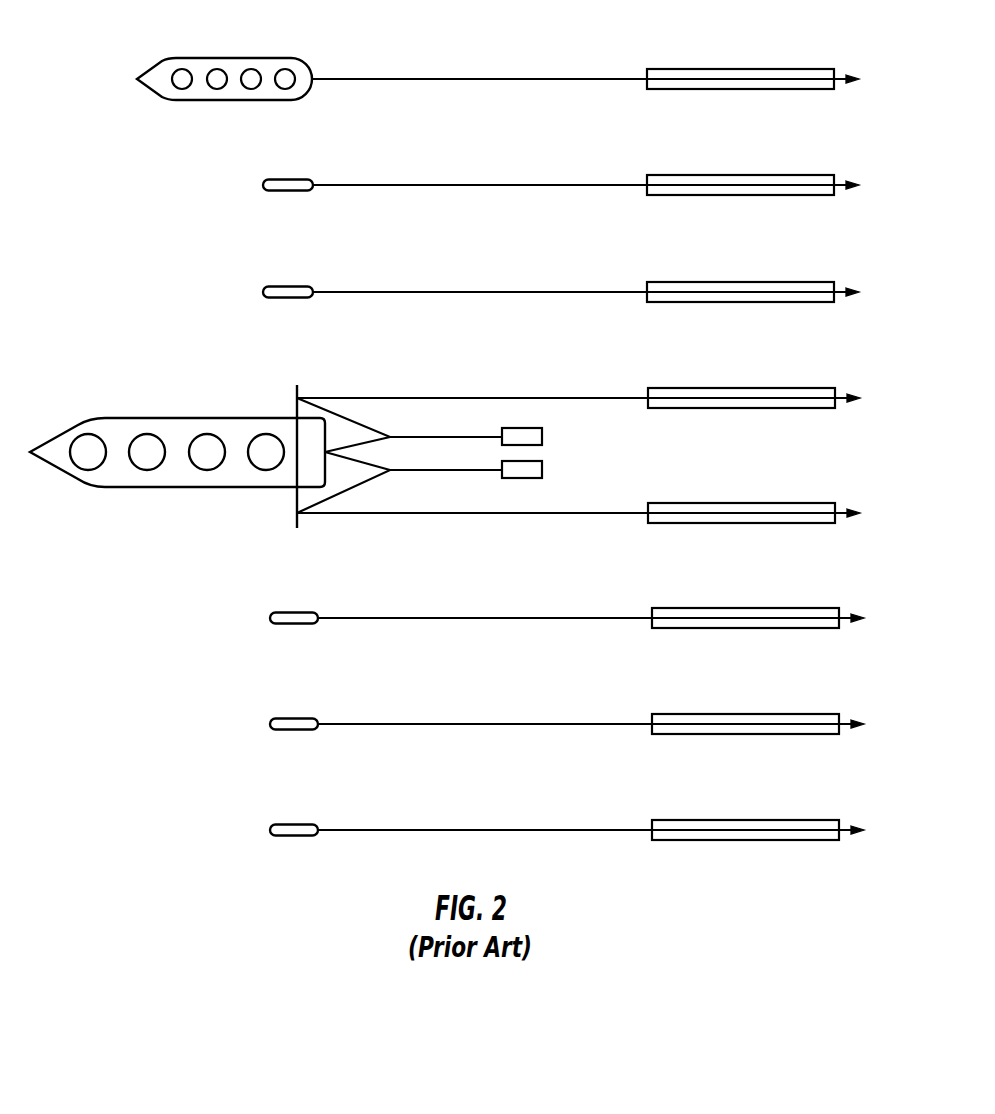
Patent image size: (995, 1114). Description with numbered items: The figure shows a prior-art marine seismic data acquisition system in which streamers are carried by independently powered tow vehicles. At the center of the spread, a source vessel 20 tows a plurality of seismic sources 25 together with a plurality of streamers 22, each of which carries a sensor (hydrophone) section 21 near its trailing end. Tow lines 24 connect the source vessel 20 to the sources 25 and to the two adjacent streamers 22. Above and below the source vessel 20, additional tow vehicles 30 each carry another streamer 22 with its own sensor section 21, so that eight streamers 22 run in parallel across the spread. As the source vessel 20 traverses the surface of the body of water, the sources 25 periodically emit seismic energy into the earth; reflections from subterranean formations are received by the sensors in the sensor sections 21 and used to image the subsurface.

The source vessel 20 is at (177, 478).
The sensor sections 21 is at (755, 430).
The streamers 22 is at (474, 431).
The tow lines 24 is at (399, 456).
The seismic sources 25 is at (564, 456).
The tow vehicles 30 is at (251, 425).